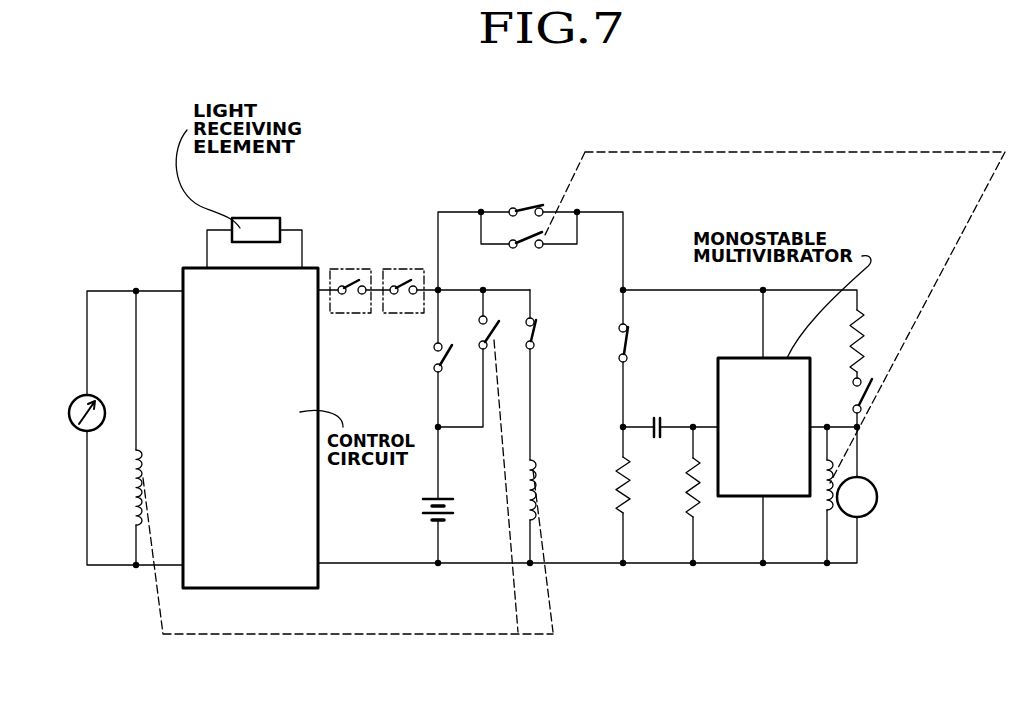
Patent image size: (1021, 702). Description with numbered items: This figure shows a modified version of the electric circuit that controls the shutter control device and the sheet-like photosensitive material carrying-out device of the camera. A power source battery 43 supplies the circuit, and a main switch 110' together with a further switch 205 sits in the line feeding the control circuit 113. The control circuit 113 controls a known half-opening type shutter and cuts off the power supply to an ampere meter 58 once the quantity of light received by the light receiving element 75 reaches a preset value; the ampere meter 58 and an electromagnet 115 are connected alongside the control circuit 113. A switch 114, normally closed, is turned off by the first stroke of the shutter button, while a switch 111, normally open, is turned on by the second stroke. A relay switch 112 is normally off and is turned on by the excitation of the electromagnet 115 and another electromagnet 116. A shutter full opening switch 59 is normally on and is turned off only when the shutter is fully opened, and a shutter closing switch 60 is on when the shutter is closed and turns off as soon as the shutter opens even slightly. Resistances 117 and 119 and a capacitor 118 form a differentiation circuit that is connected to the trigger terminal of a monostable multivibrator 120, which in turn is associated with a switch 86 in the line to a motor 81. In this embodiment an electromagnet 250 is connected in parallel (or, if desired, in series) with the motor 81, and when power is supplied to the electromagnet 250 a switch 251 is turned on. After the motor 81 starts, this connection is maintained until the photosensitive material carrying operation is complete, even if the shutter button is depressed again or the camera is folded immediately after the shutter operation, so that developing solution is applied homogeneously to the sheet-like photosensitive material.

The light receiving element 75 is at (253, 226).
The control circuit 113 is at (202, 288).
The ampere meter 58 is at (75, 400).
The electromagnet 115 is at (131, 486).
The switch 205 is at (340, 268).
The main switch 110' is at (401, 267).
The switch 114 is at (526, 207).
The switch 251 is at (530, 237).
The switch 111 is at (433, 354).
The relay switch 112 is at (482, 333).
The shutter full opening switch 59 is at (538, 327).
The power source battery 43 is at (421, 506).
The electromagnet 116 is at (540, 484).
The shutter closing switch 60 is at (627, 341).
The capacitor 118 is at (655, 417).
The resistance 117 is at (628, 476).
The resistance 119 is at (688, 508).
The monostable multivibrator 120 is at (735, 358).
The switch 86 is at (870, 398).
The electromagnet 250 is at (822, 500).
The motor 81 is at (878, 494).